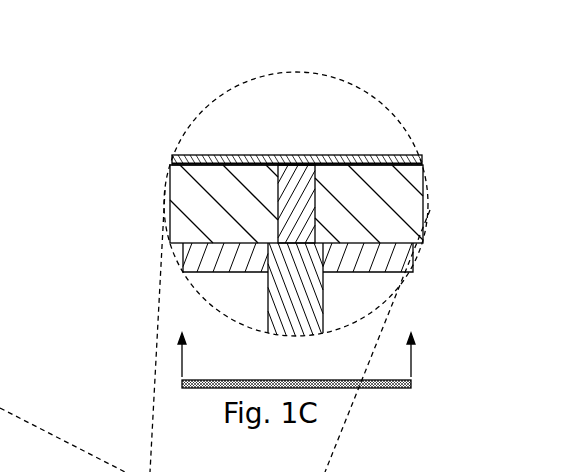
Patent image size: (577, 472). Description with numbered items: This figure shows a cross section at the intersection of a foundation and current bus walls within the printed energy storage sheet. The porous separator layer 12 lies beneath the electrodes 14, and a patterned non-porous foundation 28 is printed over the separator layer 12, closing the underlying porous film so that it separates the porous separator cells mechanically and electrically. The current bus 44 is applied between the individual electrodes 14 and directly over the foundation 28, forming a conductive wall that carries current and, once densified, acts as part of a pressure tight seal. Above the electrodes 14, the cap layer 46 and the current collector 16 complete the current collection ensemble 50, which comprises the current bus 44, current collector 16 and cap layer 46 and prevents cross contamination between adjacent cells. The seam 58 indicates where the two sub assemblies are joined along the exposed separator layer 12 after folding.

The current collection ensemble 50 is at (427, 47).
The cap layer 46 is at (377, 156).
The current bus 44 is at (293, 192).
The current collector 16 is at (327, 156).
The electrode 14 is at (405, 205).
The separator layer 12 is at (403, 258).
The non-porous foundation 28 is at (277, 310).
The seam 58 is at (411, 382).